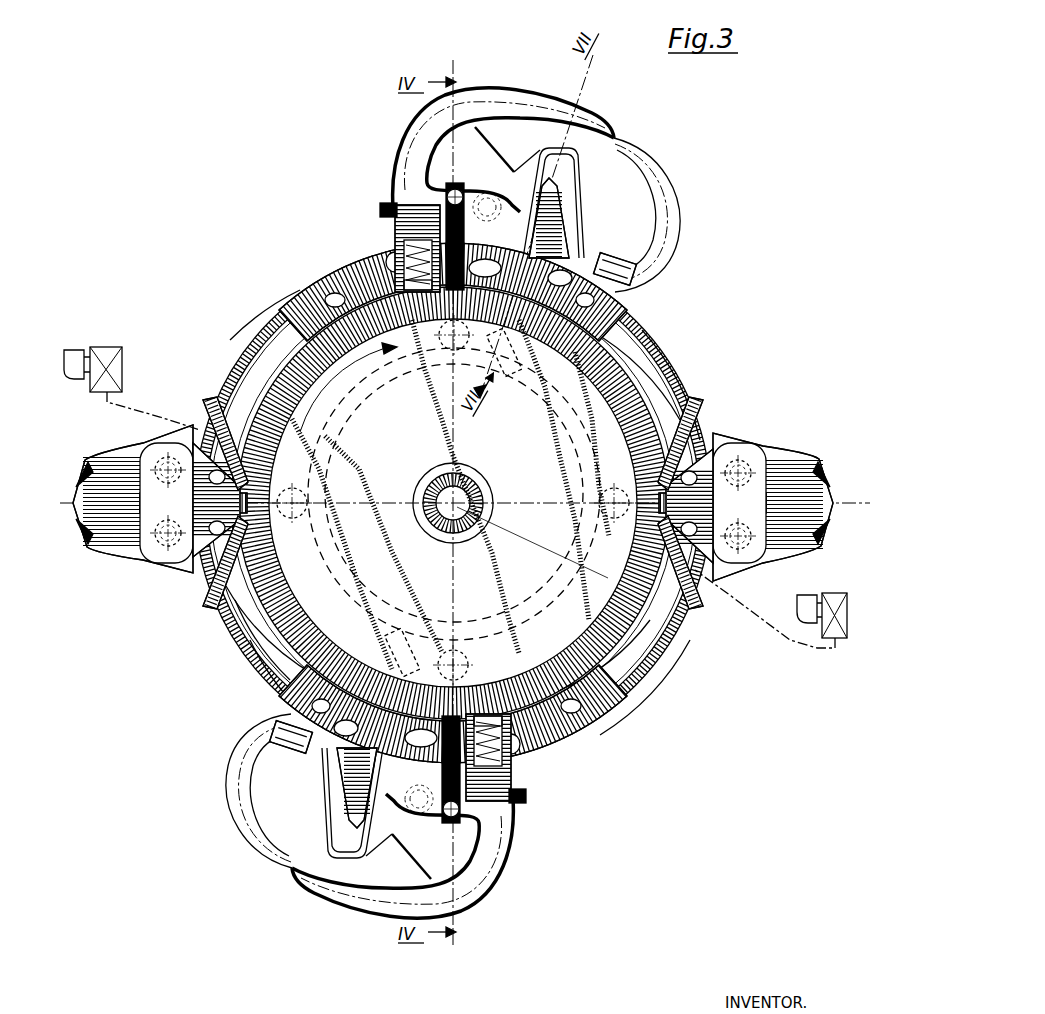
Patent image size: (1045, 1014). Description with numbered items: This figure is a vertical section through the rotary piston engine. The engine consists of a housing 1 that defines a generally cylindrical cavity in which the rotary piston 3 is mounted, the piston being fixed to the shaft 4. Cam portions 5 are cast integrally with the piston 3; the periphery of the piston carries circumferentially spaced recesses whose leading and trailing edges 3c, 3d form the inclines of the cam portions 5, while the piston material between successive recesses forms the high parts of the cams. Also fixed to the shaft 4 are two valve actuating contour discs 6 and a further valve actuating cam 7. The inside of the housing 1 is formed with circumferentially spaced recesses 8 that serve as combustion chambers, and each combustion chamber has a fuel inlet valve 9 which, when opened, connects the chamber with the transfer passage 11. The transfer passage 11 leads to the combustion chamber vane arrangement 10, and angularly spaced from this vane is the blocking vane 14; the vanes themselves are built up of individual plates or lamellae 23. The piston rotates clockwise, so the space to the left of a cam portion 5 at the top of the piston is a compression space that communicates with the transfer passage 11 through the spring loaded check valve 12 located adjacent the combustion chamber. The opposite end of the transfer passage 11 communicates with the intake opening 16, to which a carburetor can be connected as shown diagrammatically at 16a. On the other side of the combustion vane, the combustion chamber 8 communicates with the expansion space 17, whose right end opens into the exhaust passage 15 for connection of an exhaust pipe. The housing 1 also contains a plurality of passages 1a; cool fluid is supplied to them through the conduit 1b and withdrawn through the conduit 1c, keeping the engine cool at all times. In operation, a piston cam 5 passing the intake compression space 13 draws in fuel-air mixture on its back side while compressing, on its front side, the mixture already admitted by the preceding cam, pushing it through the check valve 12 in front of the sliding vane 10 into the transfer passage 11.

The housing 1 is at (257, 335).
The passages 1a is at (660, 378).
The conduit 1b is at (297, 318).
The conduit 1c is at (625, 675).
The rotary piston 3 is at (280, 333).
The leading edges 3c is at (292, 518).
The trailing edges 3d is at (350, 300).
The shaft 4 is at (633, 617).
The cam portions 5 is at (308, 263).
The valve actuating contour discs 6 is at (250, 620).
The valve actuating cam 7 is at (260, 655).
The recesses 8 is at (600, 296).
The fuel inlet valve 9 is at (580, 252).
The combustion chamber vane arrangement 10 is at (455, 160).
The transfer passage 11 is at (432, 127).
The spring loaded check valve 12 is at (385, 243).
The intake compression space 13 is at (290, 380).
The blocking vane 14 is at (130, 468).
The exhaust passage 15 is at (200, 560).
The intake opening 16 is at (193, 420).
The carburetor 16a is at (107, 340).
The expansion space 17 is at (660, 345).
The lamellae 23 is at (490, 180).